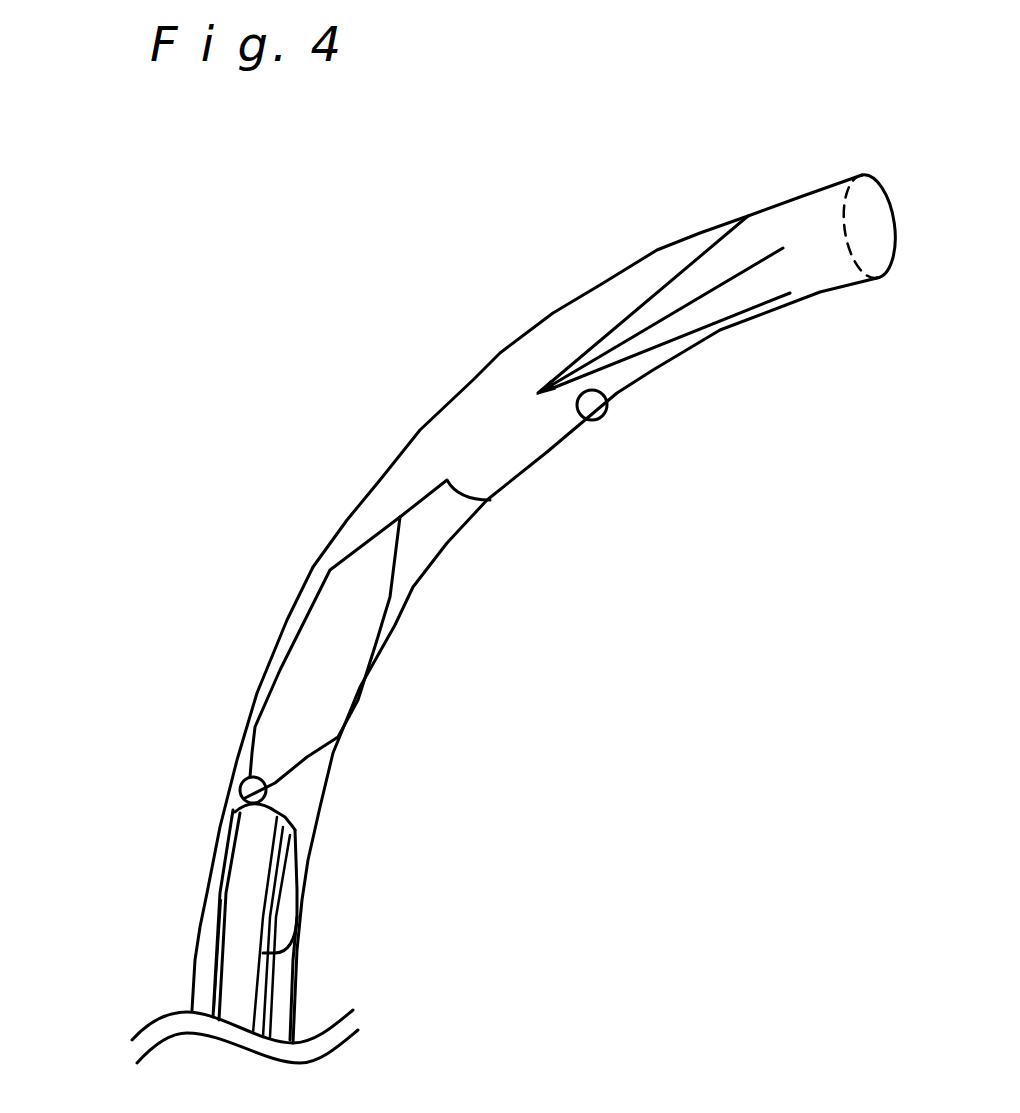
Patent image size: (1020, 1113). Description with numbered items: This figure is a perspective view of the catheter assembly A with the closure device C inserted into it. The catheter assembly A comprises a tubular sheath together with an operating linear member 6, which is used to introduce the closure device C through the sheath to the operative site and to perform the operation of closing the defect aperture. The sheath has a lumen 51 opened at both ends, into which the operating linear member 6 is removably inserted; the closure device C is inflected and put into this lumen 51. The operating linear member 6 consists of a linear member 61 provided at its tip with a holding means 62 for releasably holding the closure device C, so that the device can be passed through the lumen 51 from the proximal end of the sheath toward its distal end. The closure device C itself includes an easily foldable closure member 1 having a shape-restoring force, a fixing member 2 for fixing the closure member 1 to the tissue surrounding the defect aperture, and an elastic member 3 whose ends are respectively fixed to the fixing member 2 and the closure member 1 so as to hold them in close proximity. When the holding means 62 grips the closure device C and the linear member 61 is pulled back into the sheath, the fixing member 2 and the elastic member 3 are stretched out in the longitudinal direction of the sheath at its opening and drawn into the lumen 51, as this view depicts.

The closure member 1 is at (395, 590).
The fixing member 2 is at (665, 282).
The elastic member 3 is at (490, 500).
The lumen 51 is at (583, 418).
The operating linear member 6 is at (202, 883).
The linear member 61 is at (213, 928).
The holding means 62 is at (295, 883).
The catheter assembly A is at (317, 505).
The closure device C is at (351, 724).